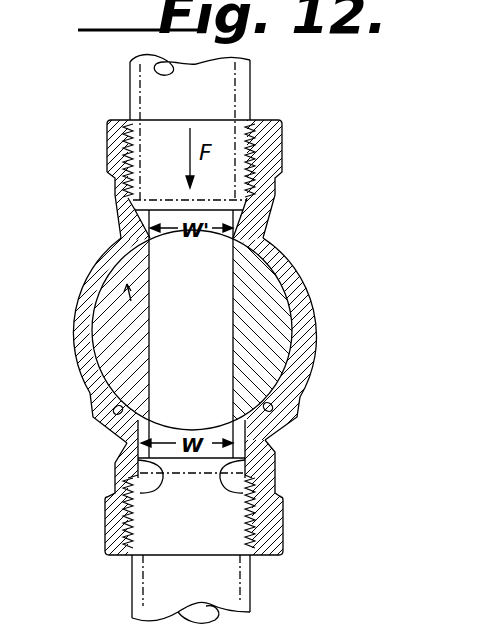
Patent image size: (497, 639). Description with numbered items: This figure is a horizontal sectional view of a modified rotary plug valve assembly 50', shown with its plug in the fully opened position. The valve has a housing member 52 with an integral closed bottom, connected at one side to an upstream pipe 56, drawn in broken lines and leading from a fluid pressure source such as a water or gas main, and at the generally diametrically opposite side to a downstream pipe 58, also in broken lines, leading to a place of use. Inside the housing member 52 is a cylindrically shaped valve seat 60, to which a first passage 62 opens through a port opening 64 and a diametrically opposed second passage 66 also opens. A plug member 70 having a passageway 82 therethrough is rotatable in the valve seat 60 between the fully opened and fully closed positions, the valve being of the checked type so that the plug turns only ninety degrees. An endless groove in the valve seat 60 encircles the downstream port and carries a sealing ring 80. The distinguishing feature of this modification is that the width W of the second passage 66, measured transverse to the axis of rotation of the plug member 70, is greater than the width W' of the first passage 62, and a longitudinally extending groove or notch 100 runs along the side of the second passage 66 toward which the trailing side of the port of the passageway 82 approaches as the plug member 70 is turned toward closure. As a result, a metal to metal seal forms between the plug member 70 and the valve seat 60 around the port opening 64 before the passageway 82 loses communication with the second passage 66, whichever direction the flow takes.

The upstream pipe 56 is at (255, 95).
The housing member 52 is at (270, 247).
The port opening 64 is at (218, 238).
The first passage 62 is at (163, 238).
The passageway 82 is at (150, 331).
The valve seat 60 is at (283, 343).
The rotary plug valve assembly 50' is at (342, 380).
The plug member 70 is at (92, 368).
The sealing ring 80 is at (106, 420).
The longitudinally extending groove or notch 100 is at (130, 496).
The second passage 66 is at (280, 497).
The downstream pipe 58 is at (262, 592).